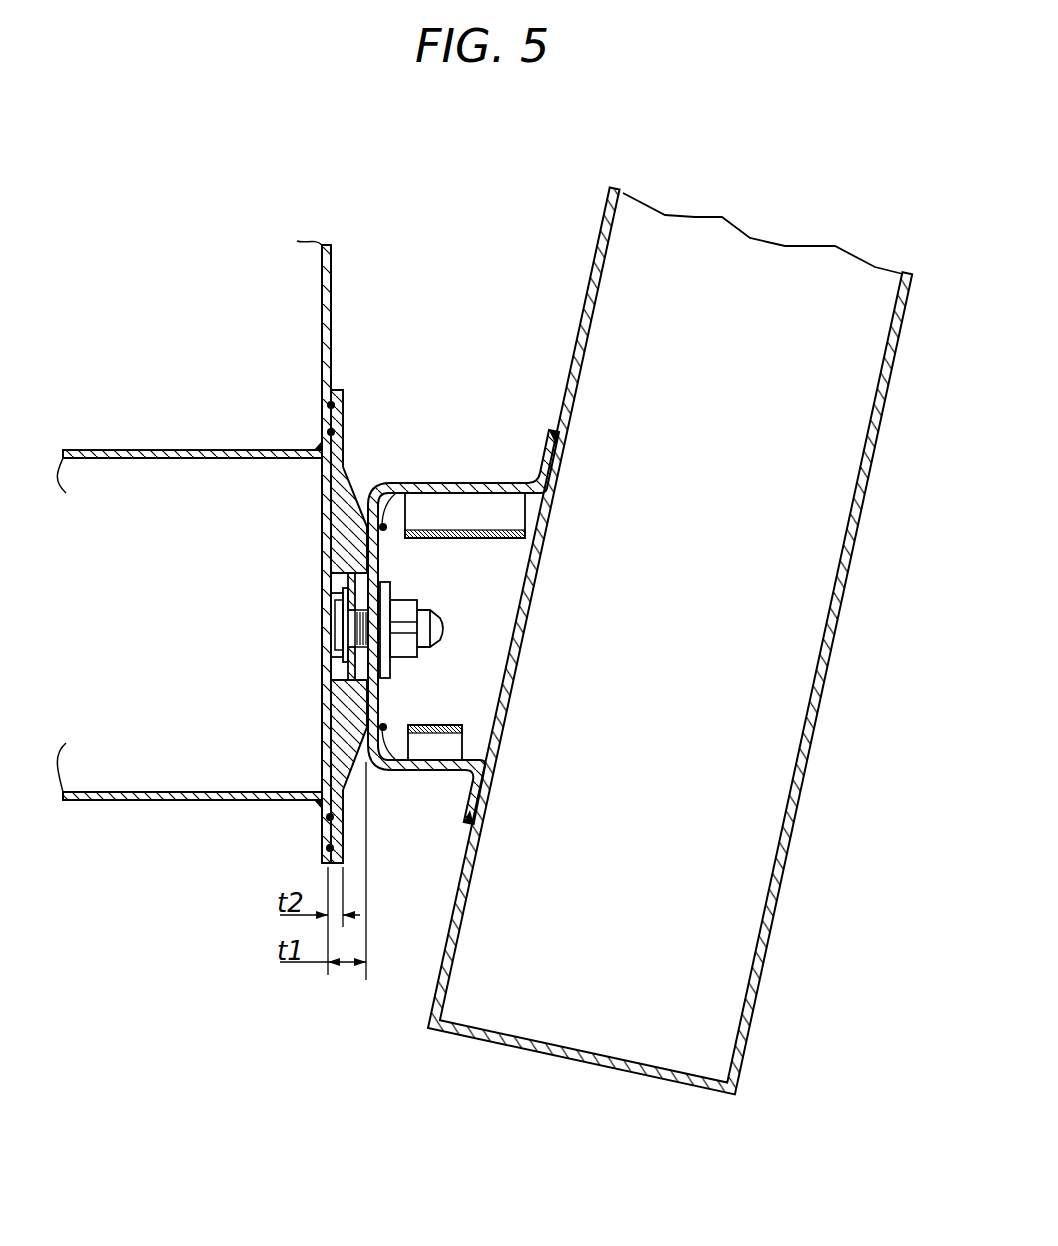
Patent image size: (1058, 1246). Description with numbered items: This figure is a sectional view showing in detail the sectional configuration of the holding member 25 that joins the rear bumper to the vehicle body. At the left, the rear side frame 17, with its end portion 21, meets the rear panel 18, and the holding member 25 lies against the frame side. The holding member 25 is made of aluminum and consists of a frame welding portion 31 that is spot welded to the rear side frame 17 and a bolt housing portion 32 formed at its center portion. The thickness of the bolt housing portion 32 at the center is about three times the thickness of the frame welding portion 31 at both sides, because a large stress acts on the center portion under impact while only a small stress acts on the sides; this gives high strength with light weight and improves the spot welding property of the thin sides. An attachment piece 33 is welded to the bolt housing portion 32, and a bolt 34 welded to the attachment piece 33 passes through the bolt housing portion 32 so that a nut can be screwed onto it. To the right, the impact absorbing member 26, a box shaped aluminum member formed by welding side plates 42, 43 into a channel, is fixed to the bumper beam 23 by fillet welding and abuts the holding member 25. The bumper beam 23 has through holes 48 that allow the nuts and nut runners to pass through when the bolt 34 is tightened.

The rear side frame 17 is at (125, 398).
The rear panel 18 is at (333, 268).
The end portion 21 is at (245, 449).
The bumper beam 23 is at (607, 217).
The holding member 25 is at (352, 432).
The impact absorbing member 26 is at (458, 420).
The frame welding portion 31 is at (320, 828).
The bolt housing portion 32 is at (363, 755).
The attachment piece 33 is at (345, 579).
The bolt 34 is at (346, 681).
The side plate 42 is at (487, 483).
The side plate 43 is at (432, 773).
The through hole 48 is at (537, 560).